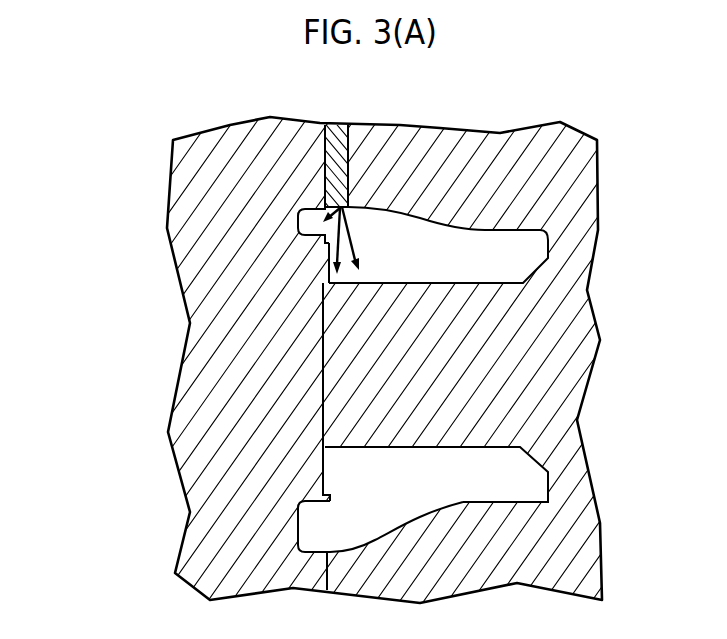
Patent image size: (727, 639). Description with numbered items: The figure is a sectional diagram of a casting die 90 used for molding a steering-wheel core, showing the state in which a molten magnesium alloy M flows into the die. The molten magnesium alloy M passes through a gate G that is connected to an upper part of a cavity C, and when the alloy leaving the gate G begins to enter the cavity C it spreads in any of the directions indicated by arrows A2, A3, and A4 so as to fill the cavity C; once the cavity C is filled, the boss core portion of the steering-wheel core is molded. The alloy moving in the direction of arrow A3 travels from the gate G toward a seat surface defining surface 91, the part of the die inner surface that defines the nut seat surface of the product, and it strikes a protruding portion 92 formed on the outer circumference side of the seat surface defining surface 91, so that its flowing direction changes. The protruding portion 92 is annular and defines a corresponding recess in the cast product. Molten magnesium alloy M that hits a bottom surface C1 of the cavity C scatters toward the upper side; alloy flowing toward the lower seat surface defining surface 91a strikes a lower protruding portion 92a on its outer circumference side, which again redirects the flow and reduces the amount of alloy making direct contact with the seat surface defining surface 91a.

The casting die 90 is at (227, 219).
The molten magnesium alloy M is at (335, 153).
The gate G is at (350, 143).
The cavity C is at (497, 263).
The bottom surface of the cavity C1 is at (428, 513).
The protruding portion 92 is at (325, 243).
The seat surface defining surface 91 is at (326, 267).
The seat surface defining surface 91a is at (323, 465).
The protruding portion 92a is at (330, 488).
The arrow A2 is at (325, 209).
The arrow A3 is at (335, 254).
The arrow A4 is at (355, 243).